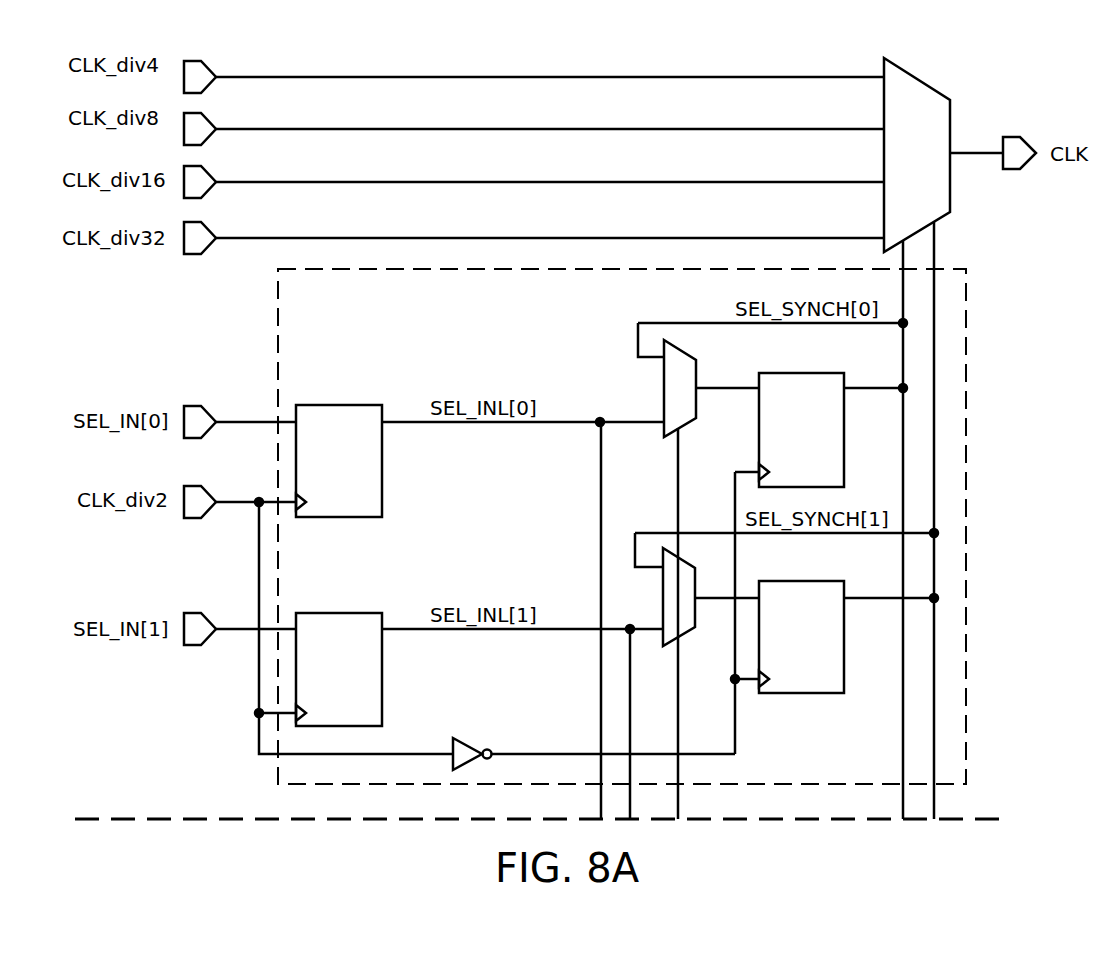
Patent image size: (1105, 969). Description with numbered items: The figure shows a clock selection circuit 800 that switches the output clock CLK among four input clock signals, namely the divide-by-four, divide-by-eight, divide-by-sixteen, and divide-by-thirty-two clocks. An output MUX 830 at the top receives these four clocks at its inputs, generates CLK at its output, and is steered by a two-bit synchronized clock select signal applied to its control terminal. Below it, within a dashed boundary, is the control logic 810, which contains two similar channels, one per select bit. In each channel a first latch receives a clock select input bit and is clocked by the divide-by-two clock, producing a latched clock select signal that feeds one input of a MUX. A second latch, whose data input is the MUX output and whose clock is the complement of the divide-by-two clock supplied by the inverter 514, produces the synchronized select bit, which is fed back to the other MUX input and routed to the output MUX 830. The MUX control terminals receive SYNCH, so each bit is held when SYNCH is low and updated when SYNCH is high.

The clock selection circuit 800 is at (1026, 656).
The control logic 810 is at (966, 326).
The output MUX 830 is at (908, 72).
The inverter 514 is at (466, 738).